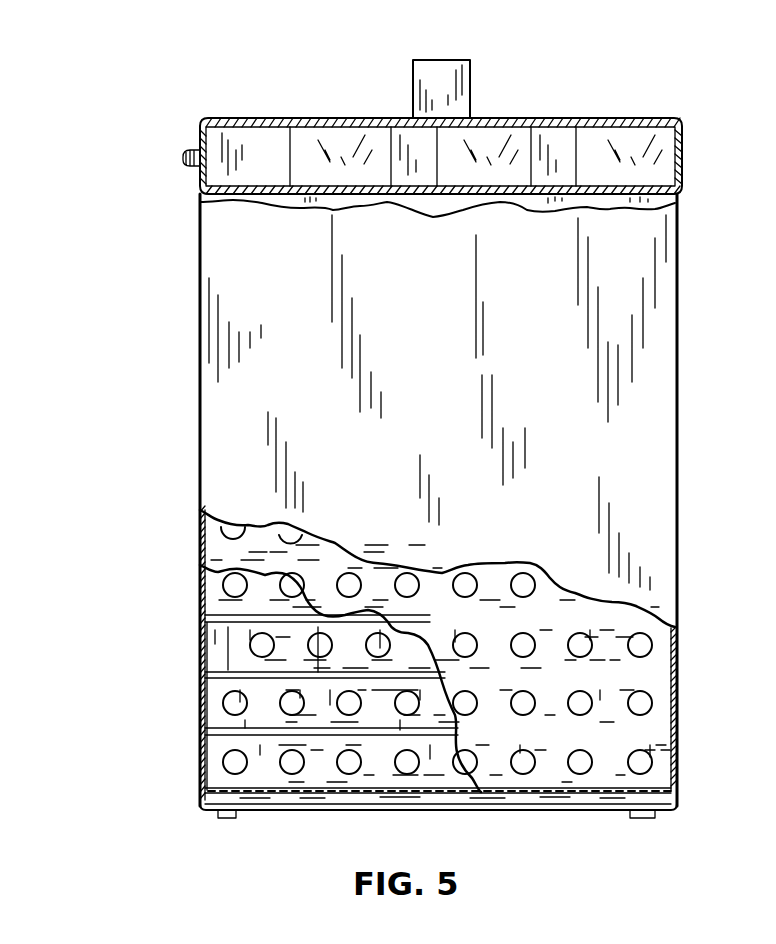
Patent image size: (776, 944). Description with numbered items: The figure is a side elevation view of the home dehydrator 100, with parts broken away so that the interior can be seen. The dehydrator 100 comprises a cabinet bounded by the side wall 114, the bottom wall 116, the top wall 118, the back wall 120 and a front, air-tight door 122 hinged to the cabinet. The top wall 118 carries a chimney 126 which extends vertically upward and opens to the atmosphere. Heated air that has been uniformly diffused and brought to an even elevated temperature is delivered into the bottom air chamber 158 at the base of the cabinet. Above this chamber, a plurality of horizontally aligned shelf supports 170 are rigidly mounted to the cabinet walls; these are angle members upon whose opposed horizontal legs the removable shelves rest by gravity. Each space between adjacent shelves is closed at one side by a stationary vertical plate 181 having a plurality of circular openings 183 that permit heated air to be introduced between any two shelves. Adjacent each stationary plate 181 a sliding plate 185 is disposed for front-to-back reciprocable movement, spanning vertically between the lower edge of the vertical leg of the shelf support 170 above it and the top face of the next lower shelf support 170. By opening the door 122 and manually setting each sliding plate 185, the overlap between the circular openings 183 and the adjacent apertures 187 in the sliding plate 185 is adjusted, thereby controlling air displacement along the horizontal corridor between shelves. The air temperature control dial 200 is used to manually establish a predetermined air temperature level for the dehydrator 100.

The home dehydrator 100 is at (656, 103).
The side wall 114 is at (430, 345).
The bottom wall 116 is at (512, 812).
The top wall 118 is at (520, 118).
The back wall 120 is at (677, 423).
The front air-tight door 122 is at (200, 442).
The chimney 126 is at (462, 73).
The bottom air chamber 158 is at (478, 797).
The shelf supports 170 is at (205, 617).
The stationary vertical plate 181 is at (536, 688).
The circular openings 183 is at (388, 532).
The sliding plate 185 is at (368, 642).
The apertures 187 is at (316, 648).
The air temperature control dial 200 is at (183, 155).